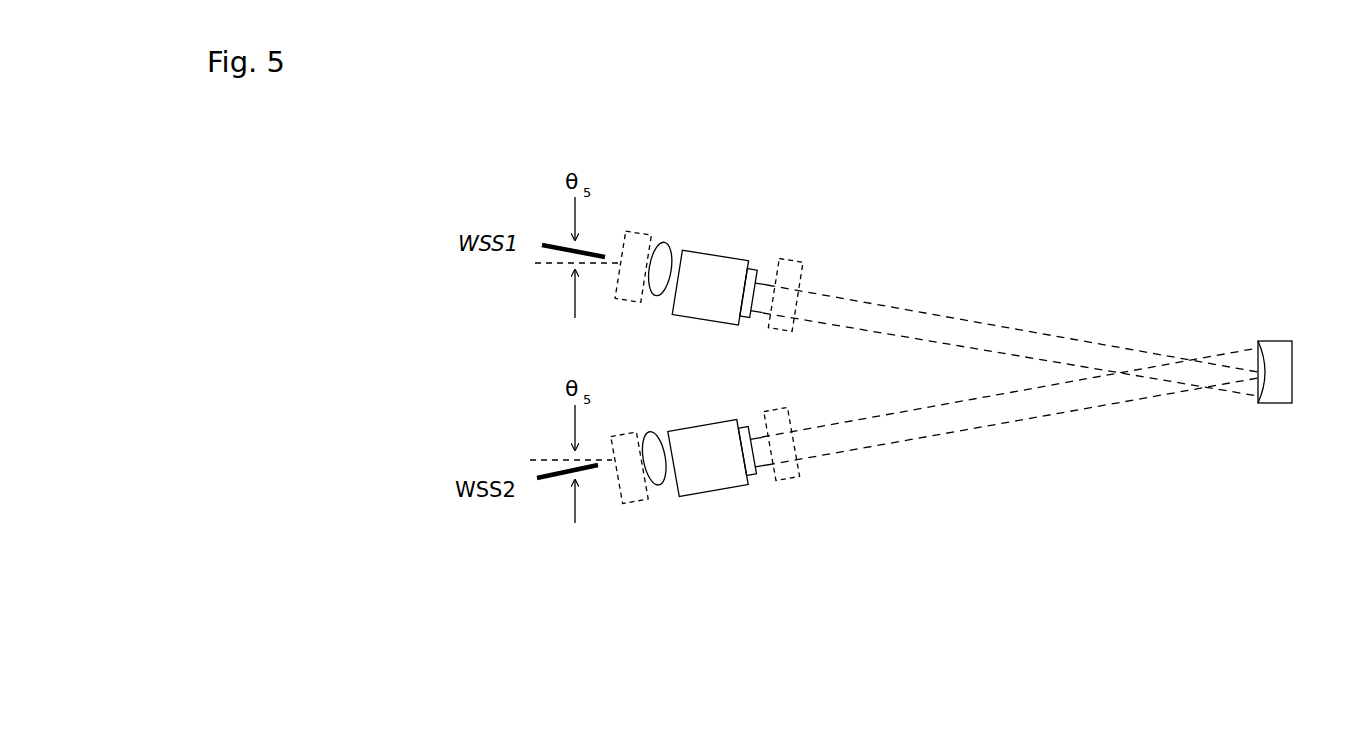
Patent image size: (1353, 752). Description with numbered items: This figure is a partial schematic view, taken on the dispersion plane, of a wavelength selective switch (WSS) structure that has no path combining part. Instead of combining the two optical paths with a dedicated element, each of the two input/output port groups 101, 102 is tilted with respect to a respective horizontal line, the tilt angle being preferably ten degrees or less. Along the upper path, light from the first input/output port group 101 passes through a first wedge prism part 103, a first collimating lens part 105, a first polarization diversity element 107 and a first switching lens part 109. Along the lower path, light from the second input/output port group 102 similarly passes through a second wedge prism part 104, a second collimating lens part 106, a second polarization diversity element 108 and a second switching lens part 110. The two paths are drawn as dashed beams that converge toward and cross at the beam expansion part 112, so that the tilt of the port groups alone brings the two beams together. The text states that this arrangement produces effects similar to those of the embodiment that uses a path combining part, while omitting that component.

The input/output port group 101 is at (550, 233).
The input/output port group 102 is at (543, 490).
The wedge prism part 103 is at (634, 226).
The wedge prism part 104 is at (640, 505).
The collimating lens part 105 is at (668, 240).
The collimating lens part 106 is at (662, 490).
The polarization diversity element 107 is at (729, 256).
The polarization diversity element 108 is at (732, 500).
The switching lens part 109 is at (796, 263).
The switching lens part 110 is at (795, 475).
The beam expansion part 112 is at (1274, 335).